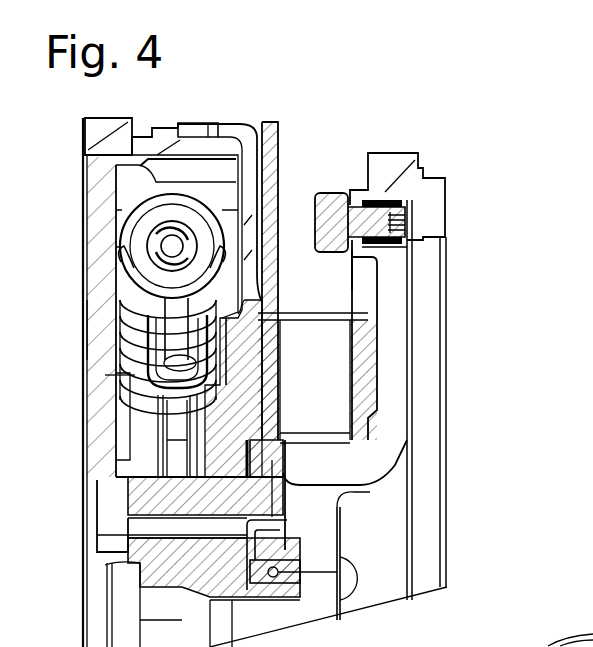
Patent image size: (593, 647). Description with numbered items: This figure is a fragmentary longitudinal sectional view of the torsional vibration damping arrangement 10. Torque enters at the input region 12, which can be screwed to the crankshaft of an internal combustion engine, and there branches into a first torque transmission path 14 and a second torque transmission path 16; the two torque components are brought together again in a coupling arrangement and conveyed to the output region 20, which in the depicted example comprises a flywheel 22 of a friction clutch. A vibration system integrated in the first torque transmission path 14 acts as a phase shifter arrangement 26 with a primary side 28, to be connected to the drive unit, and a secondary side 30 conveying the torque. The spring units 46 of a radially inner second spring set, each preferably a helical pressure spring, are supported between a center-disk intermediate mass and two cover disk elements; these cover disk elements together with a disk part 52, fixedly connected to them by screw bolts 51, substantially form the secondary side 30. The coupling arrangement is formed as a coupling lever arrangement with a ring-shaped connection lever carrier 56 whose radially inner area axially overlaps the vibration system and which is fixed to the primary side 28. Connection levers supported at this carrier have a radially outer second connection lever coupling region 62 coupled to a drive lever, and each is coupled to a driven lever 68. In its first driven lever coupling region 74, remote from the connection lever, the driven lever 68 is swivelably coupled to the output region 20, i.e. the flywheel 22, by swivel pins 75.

The torsional vibration damping arrangement 10 is at (485, 127).
The input region 12 is at (78, 488).
The first torque transmission path 14 is at (81, 258).
The second torque transmission path 16 is at (198, 612).
The output region 20 is at (412, 148).
The flywheel 22 is at (385, 343).
The phase shifter arrangement 26 is at (165, 117).
The primary side 28 is at (84, 333).
The secondary side 30 is at (302, 268).
The spring unit 46 is at (138, 232).
The screw bolt 51 is at (148, 440).
The disk part 52 is at (270, 121).
The connection lever carrier 56 is at (168, 562).
The second connection lever coupling region 62 is at (574, 645).
The driven lever 68 is at (342, 198).
The first driven lever coupling region 74 is at (316, 190).
The swivel pin 75 is at (400, 220).